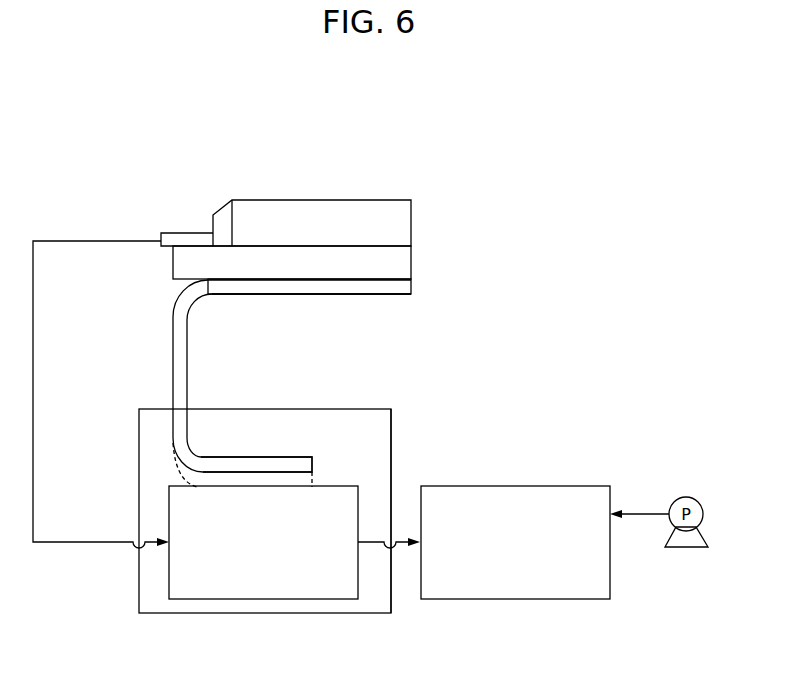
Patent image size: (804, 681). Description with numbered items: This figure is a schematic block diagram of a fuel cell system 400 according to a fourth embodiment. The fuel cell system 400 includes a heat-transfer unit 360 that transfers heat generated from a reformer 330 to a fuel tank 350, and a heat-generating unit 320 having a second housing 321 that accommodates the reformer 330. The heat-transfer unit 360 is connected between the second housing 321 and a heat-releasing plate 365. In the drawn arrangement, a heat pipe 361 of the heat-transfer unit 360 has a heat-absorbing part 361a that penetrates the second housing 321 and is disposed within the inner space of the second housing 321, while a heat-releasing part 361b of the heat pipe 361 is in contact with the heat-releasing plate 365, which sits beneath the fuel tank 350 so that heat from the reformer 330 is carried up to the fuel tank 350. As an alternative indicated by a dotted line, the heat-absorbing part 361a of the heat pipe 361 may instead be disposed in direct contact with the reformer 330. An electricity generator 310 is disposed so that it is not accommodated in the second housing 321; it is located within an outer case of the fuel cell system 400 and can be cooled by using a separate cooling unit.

The fuel cell system 400 is at (304, 114).
The fuel tank 350 is at (350, 200).
The heat-releasing plate 365 is at (412, 257).
The heat-transfer unit 360 is at (425, 284).
The heat pipe 361 is at (161, 345).
The heat-absorbing part 361a is at (265, 457).
The heat-releasing part 361b is at (338, 295).
The heat-generating unit 320 is at (411, 414).
The second housing 321 is at (392, 463).
The reformer 330 is at (307, 600).
The electricity generator 310 is at (535, 602).